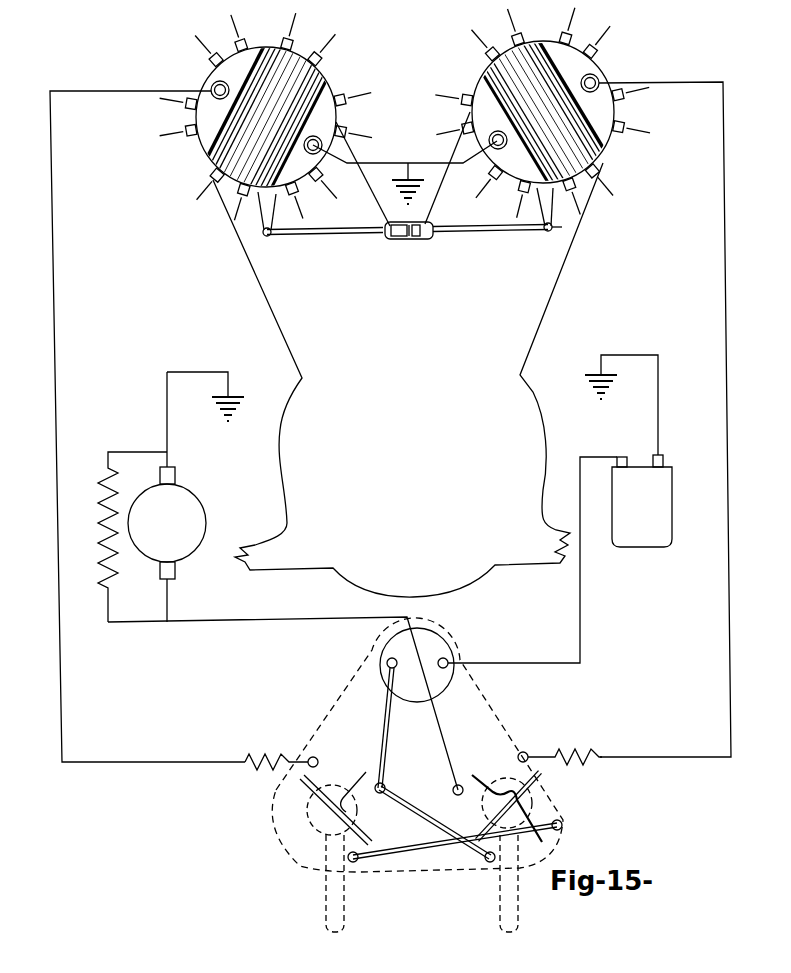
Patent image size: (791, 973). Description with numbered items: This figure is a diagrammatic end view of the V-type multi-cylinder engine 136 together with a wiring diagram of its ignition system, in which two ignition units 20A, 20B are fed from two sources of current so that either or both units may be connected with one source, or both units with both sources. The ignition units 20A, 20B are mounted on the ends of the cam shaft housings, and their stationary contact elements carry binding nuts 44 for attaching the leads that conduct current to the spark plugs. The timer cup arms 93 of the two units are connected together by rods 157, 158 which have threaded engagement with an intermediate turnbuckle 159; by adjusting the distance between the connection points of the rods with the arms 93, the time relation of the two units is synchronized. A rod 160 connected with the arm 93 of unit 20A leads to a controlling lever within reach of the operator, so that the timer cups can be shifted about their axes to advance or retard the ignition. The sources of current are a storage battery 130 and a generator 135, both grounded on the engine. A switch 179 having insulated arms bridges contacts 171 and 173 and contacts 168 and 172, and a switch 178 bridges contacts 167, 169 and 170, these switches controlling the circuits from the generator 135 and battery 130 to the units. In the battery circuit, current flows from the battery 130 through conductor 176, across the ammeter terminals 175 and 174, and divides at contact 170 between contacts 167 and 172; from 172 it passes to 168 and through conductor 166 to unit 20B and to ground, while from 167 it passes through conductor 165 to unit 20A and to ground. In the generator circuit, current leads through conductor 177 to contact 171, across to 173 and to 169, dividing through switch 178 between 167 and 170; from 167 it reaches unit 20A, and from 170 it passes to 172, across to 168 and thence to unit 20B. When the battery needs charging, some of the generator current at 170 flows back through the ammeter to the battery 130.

The ignition unit 20A is at (232, 72).
The ignition unit 20B is at (597, 68).
The binding nut 44 is at (470, 98).
The timer cup arm 93 is at (270, 212).
The multi-cylinder engine 136 is at (260, 250).
The rod 157 is at (345, 236).
The rod 158 is at (498, 228).
The turnbuckle 159 is at (417, 239).
The rod 160 is at (570, 226).
The conductor 165 is at (53, 326).
The conductor 166 is at (724, 246).
The generator 135 is at (168, 510).
The storage battery 130 is at (628, 535).
The conductor 176 is at (581, 609).
The conductor 177 is at (224, 622).
The ammeter terminal 174 is at (387, 664).
The ammeter terminal 175 is at (447, 659).
The contact 167 is at (316, 758).
The contact 168 is at (527, 752).
The contact 170 is at (384, 784).
The contact 171 is at (453, 790).
The contact 169 is at (353, 862).
The contact 172 is at (490, 862).
The contact 173 is at (562, 826).
The switch 178 is at (302, 777).
The switch 179 is at (534, 784).